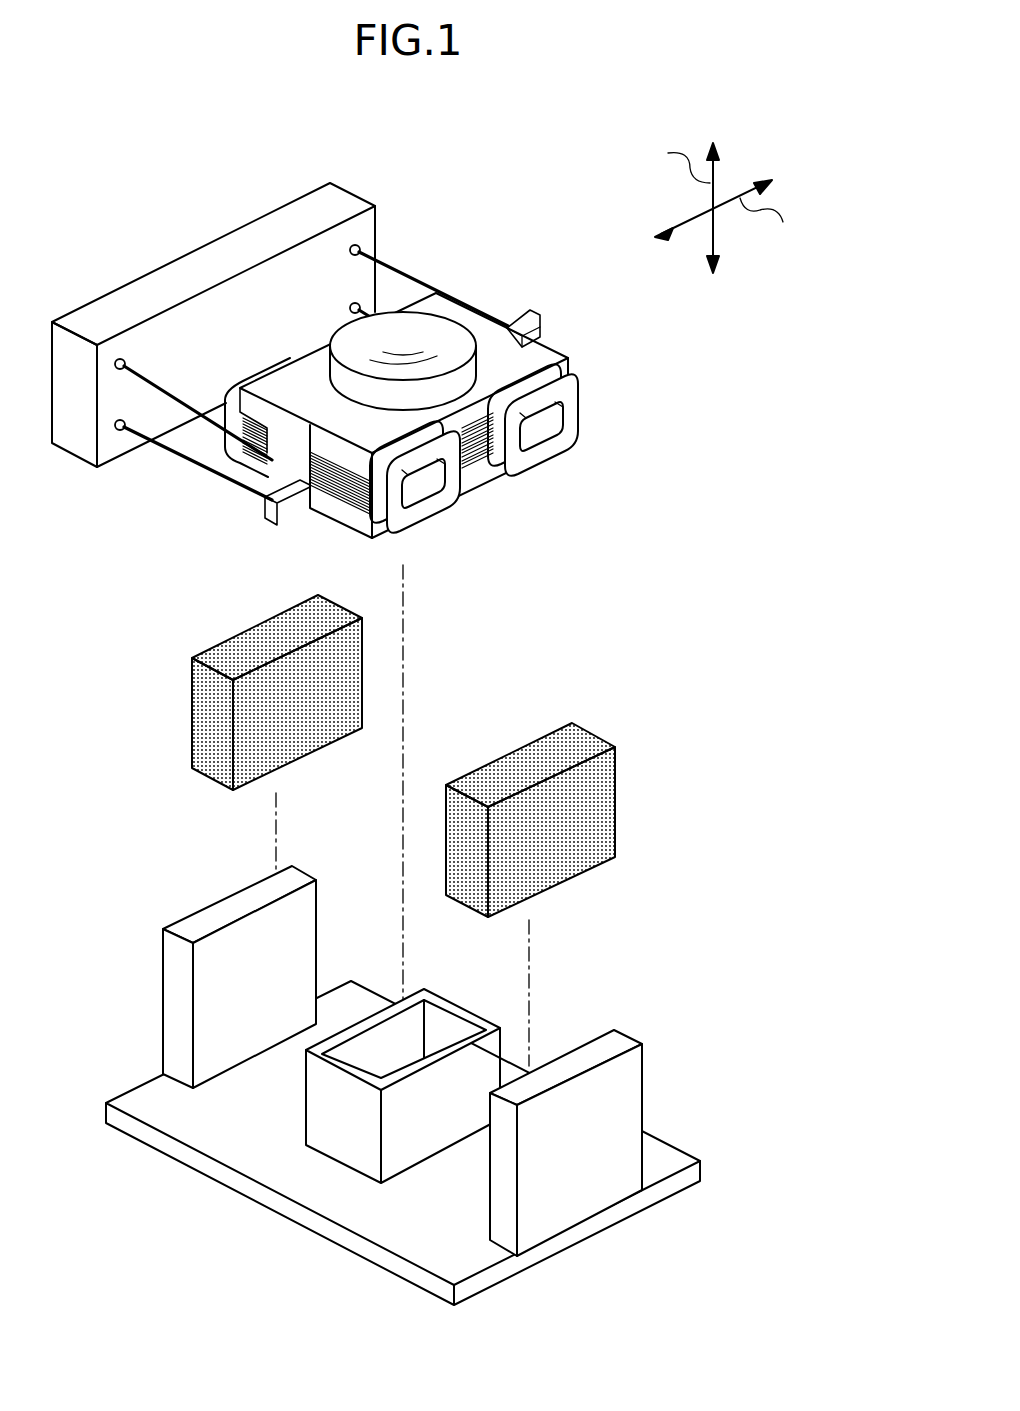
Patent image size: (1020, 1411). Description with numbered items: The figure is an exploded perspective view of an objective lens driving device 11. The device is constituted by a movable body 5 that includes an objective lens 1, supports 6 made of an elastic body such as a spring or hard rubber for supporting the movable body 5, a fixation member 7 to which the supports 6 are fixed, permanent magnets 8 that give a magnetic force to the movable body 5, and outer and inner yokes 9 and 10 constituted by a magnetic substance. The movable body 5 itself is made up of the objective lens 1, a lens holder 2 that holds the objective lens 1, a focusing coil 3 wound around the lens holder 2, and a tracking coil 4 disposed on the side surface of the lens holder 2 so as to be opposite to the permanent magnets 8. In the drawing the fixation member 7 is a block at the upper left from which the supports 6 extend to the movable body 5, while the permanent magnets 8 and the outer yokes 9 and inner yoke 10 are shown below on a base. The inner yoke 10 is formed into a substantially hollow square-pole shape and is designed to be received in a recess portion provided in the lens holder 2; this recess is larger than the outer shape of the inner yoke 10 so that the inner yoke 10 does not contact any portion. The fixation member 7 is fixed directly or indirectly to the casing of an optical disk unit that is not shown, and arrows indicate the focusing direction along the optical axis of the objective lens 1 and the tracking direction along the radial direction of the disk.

The objective lens 1 is at (352, 340).
The lens holder 2 is at (530, 352).
The focusing coil 3 is at (345, 493).
The tracking coil 4 is at (573, 415).
The movable body 5 is at (493, 507).
The supports 6 is at (172, 455).
The fixation member 7 is at (207, 263).
The permanent magnets 8 is at (195, 714).
The outer yokes 9 is at (173, 998).
The inner yoke 10 is at (318, 1111).
The objective lens driving device 11 is at (655, 330).